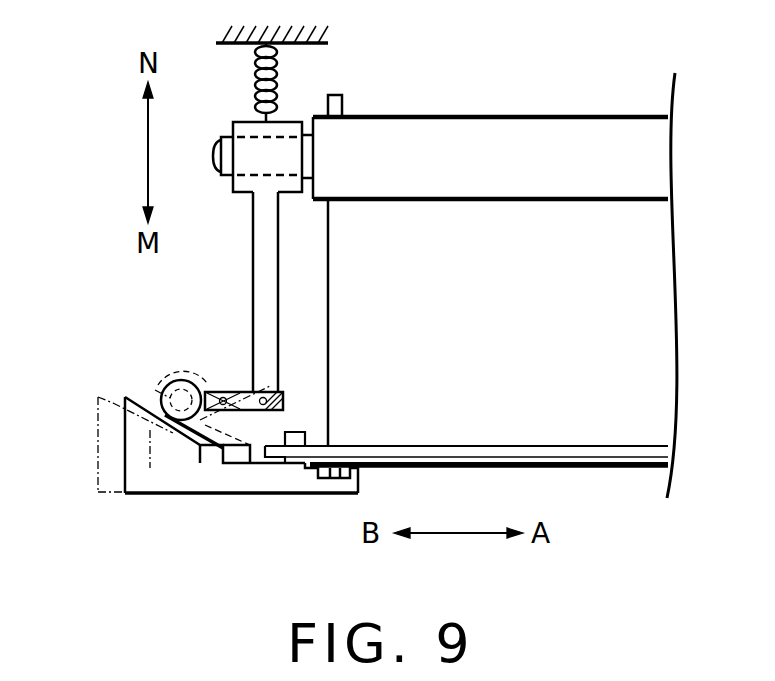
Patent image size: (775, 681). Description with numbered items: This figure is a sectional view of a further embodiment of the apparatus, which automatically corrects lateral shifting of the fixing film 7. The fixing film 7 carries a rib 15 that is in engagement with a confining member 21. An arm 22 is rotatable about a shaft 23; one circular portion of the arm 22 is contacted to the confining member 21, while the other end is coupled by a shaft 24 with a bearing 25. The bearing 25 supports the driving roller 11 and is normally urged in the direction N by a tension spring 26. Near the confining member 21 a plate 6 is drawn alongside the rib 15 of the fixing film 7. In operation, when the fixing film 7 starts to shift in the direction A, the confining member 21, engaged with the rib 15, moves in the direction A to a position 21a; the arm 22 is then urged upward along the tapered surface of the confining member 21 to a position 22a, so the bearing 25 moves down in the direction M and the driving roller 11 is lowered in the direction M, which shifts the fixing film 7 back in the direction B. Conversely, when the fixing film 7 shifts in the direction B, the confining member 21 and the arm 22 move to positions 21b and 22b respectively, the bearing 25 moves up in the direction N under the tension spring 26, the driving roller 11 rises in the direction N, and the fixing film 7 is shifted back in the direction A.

The plate 6 is at (603, 456).
The fixing film 7 is at (612, 467).
The driving roller 11 is at (483, 133).
The rib 15 is at (332, 480).
The confining member 21 is at (227, 482).
The position of confining member 21a is at (147, 468).
The position of confining member 21b is at (98, 448).
The arm 22 is at (165, 382).
The position of arm 22a is at (187, 363).
The position of arm 22b is at (158, 383).
The shaft 23 is at (227, 390).
The shaft 24 is at (287, 390).
The bearing 25 is at (265, 267).
The tension spring 26 is at (278, 78).